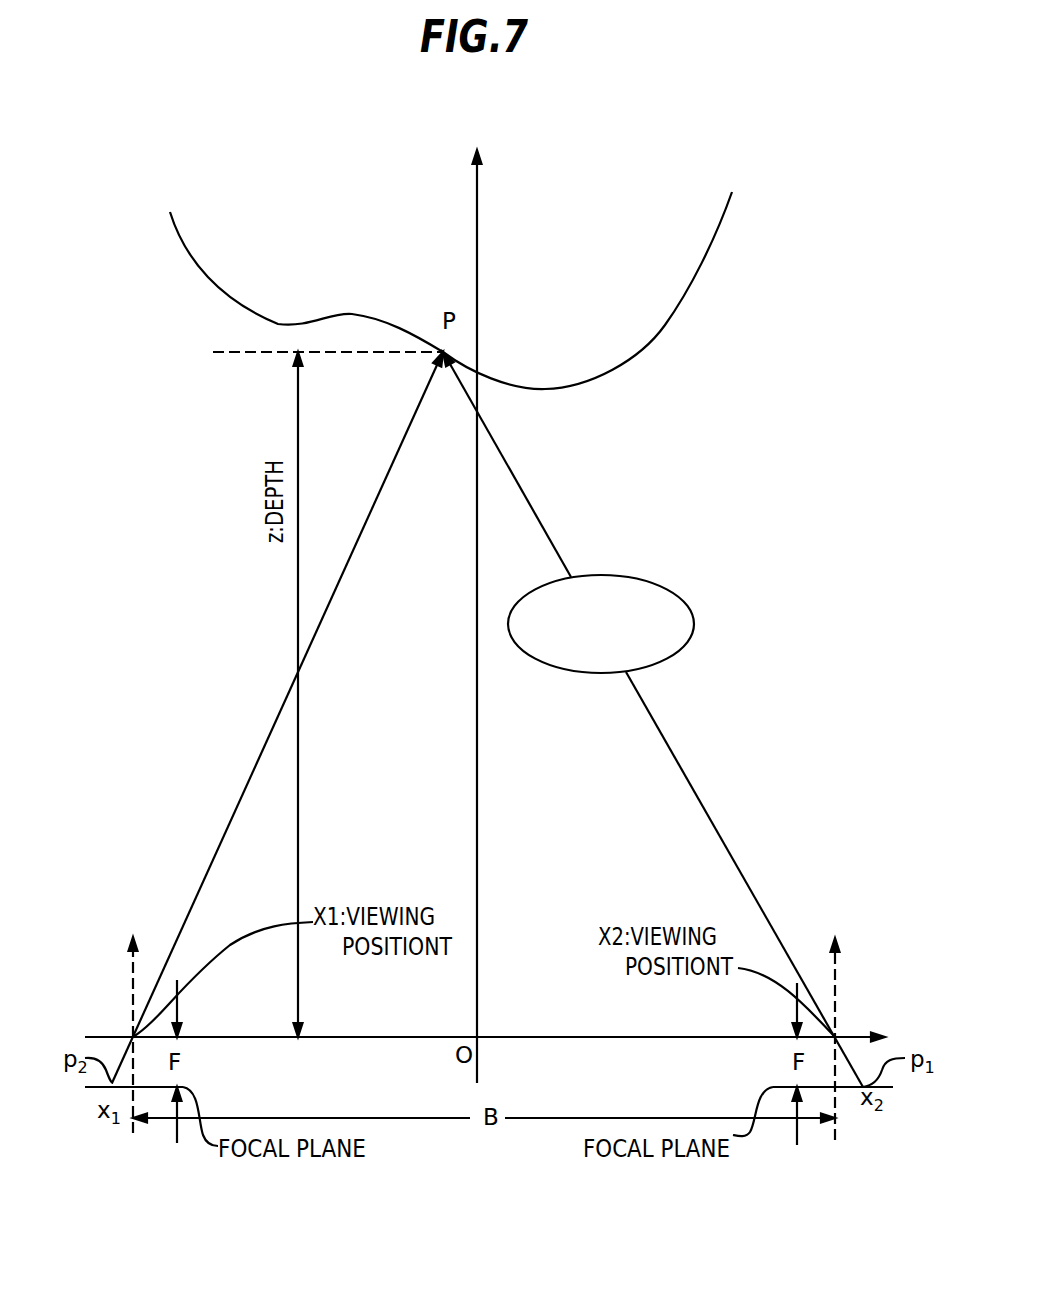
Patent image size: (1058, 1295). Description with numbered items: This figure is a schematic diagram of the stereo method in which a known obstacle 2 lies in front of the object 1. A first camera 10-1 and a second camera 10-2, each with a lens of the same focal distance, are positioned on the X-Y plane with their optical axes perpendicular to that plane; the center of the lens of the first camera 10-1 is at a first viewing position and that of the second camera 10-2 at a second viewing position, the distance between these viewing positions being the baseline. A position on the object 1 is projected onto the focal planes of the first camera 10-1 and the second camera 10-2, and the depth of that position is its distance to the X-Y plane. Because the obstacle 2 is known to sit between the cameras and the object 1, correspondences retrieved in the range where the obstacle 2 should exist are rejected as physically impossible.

The object 1 is at (643, 355).
The obstacle 2 is at (632, 575).
The first camera 10-1 is at (107, 1002).
The second camera 10-2 is at (838, 1008).